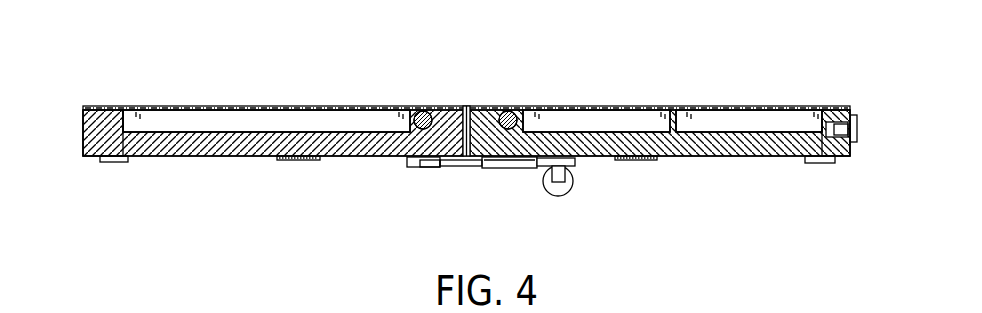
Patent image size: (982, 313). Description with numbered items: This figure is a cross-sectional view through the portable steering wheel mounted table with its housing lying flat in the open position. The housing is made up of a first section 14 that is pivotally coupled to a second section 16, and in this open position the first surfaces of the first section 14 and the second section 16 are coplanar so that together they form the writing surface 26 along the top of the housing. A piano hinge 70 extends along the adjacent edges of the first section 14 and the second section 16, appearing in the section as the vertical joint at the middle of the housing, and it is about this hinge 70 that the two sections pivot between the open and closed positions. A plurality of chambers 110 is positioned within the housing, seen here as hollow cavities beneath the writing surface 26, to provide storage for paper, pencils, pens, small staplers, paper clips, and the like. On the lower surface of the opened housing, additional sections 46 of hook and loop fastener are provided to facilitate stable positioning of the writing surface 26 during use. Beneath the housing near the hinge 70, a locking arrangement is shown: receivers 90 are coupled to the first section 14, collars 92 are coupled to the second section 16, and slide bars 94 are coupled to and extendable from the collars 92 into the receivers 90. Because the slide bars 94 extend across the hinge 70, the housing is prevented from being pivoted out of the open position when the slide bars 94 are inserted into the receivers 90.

The first section 14 is at (95, 127).
The second section 16 is at (848, 158).
The writing surface 26 is at (338, 86).
The sections of hook and loop fastener 46 is at (298, 161).
The piano hinge 70 is at (467, 106).
The receivers 90 is at (428, 168).
The collars 92 is at (510, 170).
The slide bars 94 is at (575, 166).
The chambers 110 is at (283, 107).